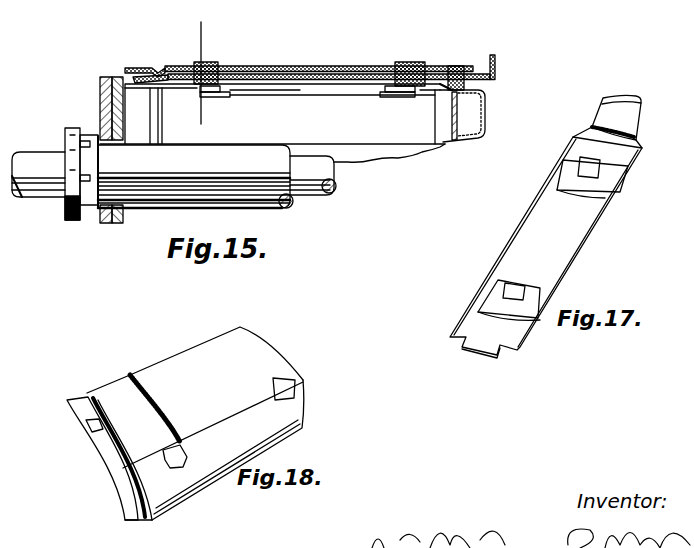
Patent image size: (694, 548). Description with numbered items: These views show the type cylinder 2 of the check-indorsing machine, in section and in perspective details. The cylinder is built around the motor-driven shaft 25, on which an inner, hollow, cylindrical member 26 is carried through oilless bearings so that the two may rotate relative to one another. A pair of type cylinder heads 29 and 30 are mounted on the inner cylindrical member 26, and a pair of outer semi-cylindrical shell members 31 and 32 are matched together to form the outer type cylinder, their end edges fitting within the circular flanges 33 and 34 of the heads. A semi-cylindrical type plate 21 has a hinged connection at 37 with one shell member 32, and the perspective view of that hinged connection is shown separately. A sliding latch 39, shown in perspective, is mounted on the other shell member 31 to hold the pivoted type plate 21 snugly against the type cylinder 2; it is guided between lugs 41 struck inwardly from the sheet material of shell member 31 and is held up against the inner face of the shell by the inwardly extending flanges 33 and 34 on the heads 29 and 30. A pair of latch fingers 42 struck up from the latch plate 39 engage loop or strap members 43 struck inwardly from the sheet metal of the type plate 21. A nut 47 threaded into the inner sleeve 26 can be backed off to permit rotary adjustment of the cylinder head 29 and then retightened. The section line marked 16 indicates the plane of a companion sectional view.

In FIG. 15, the type cylinder 2 is at (406, 145).
In FIG. 15, the section line 16 is at (201, 23).
In FIG. 18, the semi-cylindrical type plate 21 is at (175, 368).
In FIG. 15, the motor-driven shaft 25 is at (338, 184).
In FIG. 15, the inner hollow cylindrical member 26 is at (181, 211).
In FIG. 15, the type cylinder head 29 is at (104, 102).
In FIG. 15, the type cylinder head 30 is at (483, 117).
In FIG. 18, the semi-cylindrical shell member 31 is at (115, 388).
In FIG. 18, the semi-cylindrical shell member 32 is at (298, 400).
In FIG. 15, the circular flange 33 is at (478, 94).
In FIG. 15, the circular flange 34 is at (128, 68).
In FIG. 18, the hinged connection 37 is at (185, 442).
In FIG. 15, the latch 39 is at (306, 76).
In FIG. 17, the latch 39 is at (588, 226).
In FIG. 15, the lugs 41 is at (228, 94).
In FIG. 15, the latch fingers 42 is at (210, 75).
In FIG. 17, the latch fingers 42 is at (613, 170).
In FIG. 15, the loop or strap members 43 is at (210, 90).
In FIG. 15, the nut 47 is at (85, 218).